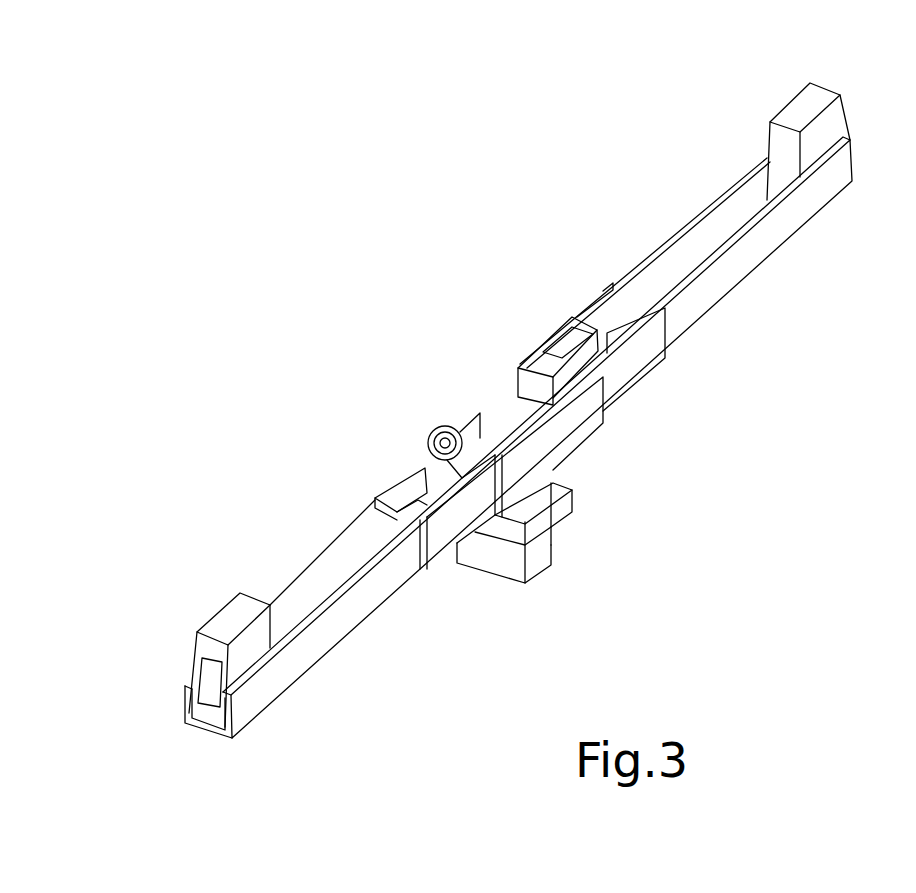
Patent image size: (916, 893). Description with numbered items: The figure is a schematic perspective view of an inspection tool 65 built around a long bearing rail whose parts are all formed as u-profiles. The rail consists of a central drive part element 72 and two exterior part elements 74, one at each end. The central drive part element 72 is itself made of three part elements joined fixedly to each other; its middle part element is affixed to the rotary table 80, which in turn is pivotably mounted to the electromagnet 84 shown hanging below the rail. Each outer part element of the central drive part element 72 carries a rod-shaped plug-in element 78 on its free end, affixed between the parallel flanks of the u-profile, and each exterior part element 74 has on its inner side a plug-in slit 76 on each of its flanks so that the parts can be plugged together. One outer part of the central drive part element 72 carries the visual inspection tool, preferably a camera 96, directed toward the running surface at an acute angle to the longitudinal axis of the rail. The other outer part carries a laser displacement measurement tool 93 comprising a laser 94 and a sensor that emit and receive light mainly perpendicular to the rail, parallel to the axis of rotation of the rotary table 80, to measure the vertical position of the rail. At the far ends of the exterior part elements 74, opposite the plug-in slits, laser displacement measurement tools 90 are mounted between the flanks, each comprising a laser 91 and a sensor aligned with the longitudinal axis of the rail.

The inspection tool 65 is at (496, 247).
The central drive part element 72 is at (563, 443).
The exterior part element 74 is at (312, 652).
The plug-in slit 76 is at (415, 495).
The rod-shaped plug-in element 78 is at (400, 515).
The rotary table 80 is at (557, 503).
The electromagnet 84 is at (540, 557).
The laser displacement measurement tool 90 is at (225, 613).
The laser 91 is at (210, 682).
The laser displacement measurement tool 93 is at (588, 355).
The laser 94 is at (568, 340).
The camera 96 is at (430, 439).